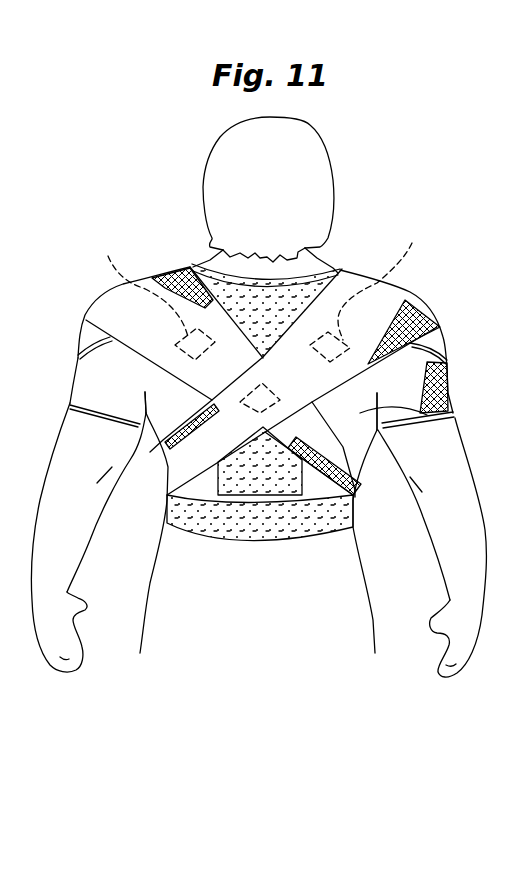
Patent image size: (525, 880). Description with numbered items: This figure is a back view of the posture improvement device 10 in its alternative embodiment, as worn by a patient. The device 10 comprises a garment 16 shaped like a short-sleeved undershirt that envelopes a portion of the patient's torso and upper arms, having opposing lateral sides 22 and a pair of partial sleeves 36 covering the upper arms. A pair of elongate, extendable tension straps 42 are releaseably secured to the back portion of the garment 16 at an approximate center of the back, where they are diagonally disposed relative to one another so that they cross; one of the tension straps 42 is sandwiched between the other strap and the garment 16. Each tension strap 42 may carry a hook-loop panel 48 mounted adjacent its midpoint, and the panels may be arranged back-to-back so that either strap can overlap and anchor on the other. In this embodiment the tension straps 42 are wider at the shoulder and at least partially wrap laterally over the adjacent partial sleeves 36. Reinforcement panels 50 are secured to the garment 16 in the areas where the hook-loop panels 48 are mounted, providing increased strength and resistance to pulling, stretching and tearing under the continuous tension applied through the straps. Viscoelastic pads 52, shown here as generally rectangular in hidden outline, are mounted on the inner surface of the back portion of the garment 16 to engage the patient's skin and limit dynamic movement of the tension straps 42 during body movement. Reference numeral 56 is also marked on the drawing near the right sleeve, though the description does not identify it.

The posture improvement device 10 is at (153, 236).
The garment 16 is at (336, 268).
The opposing lateral sides 22 is at (145, 437).
The partial sleeves 36 is at (82, 388).
The tension straps 42 is at (103, 301).
The hook-loop panel 48 is at (240, 404).
The reinforcement panels 50 is at (82, 333).
The viscoelastic pads 52 is at (253, 292).
The reinforcement panel 56 is at (447, 387).